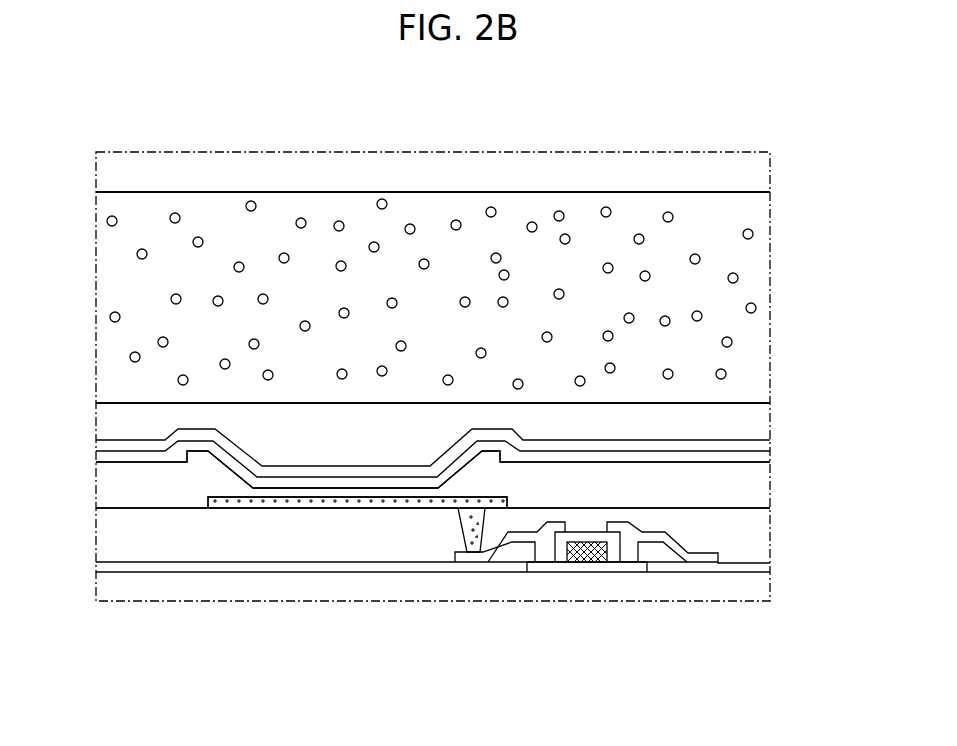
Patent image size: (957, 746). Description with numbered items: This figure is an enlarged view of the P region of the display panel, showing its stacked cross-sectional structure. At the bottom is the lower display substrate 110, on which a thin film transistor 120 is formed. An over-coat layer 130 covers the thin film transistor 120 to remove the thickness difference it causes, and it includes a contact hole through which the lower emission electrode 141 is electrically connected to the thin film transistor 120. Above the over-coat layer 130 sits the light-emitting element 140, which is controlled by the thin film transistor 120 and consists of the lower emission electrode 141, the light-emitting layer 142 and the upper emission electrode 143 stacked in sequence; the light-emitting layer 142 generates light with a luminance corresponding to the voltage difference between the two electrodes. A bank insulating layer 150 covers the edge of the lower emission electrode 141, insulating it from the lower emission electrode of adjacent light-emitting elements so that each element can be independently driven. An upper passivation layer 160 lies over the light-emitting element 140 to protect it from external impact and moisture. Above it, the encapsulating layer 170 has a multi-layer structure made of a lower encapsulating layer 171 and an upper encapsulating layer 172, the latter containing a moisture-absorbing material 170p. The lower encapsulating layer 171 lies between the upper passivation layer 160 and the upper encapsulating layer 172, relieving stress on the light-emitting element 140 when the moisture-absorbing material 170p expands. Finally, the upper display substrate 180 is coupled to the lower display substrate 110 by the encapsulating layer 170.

The P region P is at (128, 150).
The lower display substrate 110 is at (762, 587).
The thin film transistor 120 is at (576, 580).
The over-coat layer 130 is at (760, 534).
The light-emitting element 140 is at (362, 676).
The lower emission electrode 141 is at (340, 500).
The light-emitting layer 142 is at (303, 494).
The upper emission electrode 143 is at (233, 470).
The bank insulating layer 150 is at (760, 486).
The upper passivation layer 160 is at (108, 446).
The encapsulating layer 170 is at (848, 318).
The lower encapsulating layer 171 is at (760, 424).
The upper encapsulating layer 172 is at (760, 331).
The moisture-absorbing material 170p is at (148, 334).
The upper display substrate 180 is at (762, 171).